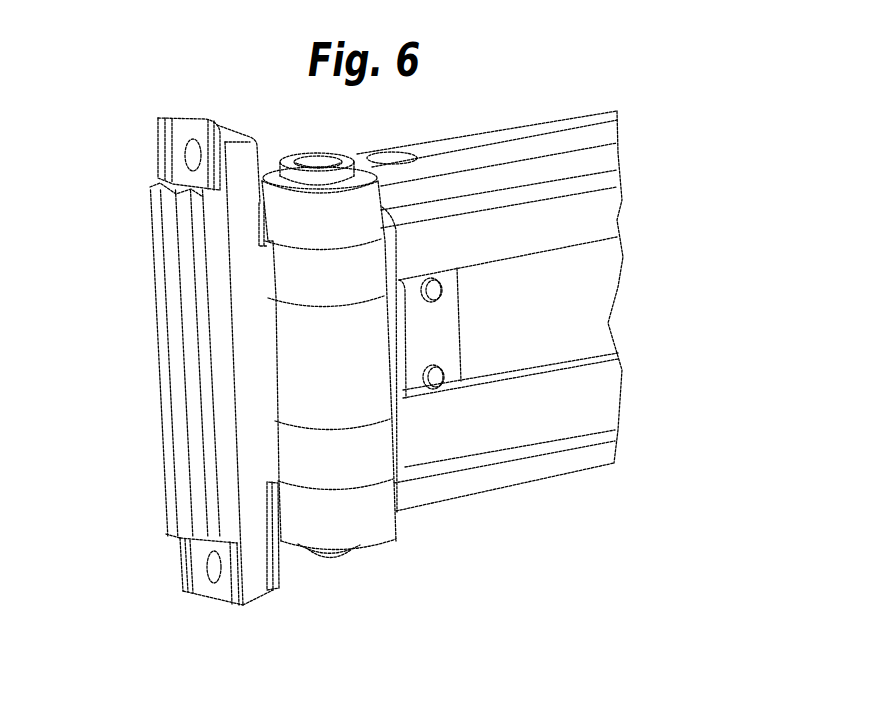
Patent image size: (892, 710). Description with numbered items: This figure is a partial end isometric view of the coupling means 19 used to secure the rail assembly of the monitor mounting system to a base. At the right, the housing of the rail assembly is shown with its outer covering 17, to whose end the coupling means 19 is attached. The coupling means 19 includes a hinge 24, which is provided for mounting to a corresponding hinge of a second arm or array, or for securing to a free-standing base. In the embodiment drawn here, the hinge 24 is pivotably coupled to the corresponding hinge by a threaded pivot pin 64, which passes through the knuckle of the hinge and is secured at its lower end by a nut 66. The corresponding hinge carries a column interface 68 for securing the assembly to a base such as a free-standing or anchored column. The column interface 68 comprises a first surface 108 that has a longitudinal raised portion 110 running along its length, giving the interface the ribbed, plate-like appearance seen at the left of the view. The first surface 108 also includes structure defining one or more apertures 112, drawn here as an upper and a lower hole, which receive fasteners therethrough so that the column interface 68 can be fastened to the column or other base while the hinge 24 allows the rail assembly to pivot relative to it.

The outer covering 17 is at (600, 205).
The coupling means 19 is at (395, 585).
The hinge 24 is at (362, 153).
The threaded pivot pin 64 is at (327, 152).
The nut 66 is at (358, 551).
The column interface 68 is at (207, 138).
The first surface 108 is at (220, 357).
The longitudinal raised portion 110 is at (155, 292).
The apertures 112 is at (178, 157).